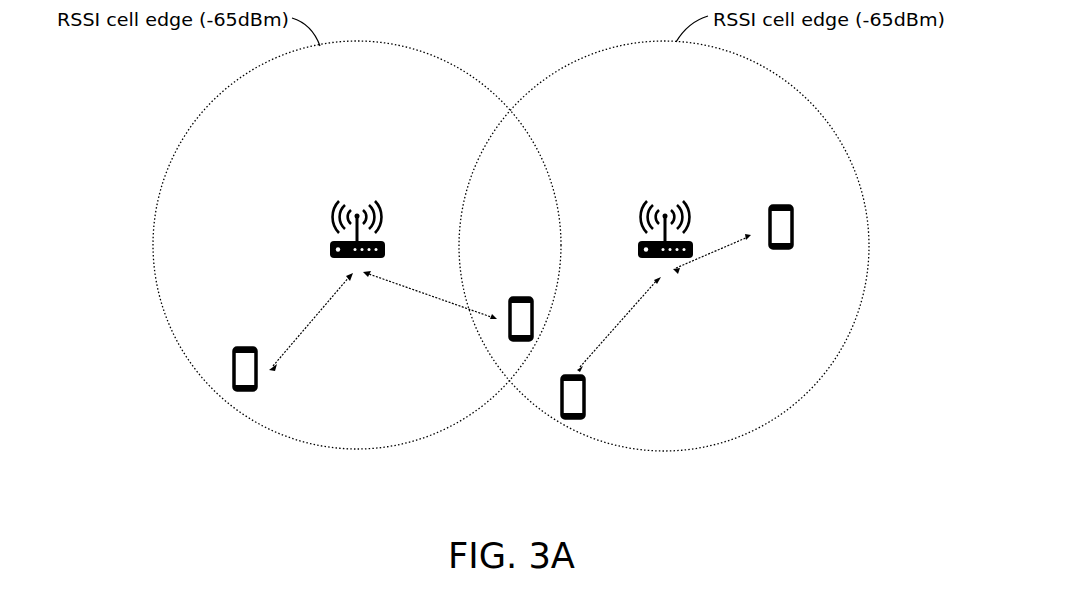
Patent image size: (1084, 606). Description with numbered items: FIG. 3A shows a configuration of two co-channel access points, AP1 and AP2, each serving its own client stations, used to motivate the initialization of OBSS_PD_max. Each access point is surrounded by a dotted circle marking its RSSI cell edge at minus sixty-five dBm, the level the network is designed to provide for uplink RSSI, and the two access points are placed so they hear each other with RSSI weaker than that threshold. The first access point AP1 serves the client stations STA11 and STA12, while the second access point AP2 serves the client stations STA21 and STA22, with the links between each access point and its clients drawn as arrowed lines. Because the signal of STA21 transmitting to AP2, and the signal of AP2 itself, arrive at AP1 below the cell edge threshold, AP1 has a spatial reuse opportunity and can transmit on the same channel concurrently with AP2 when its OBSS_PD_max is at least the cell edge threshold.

The access point AP1 is at (357, 212).
The access point AP2 is at (665, 212).
The client station STA11 is at (246, 352).
The client station STA12 is at (520, 303).
The client station STA21 is at (572, 419).
The client station STA22 is at (782, 248).